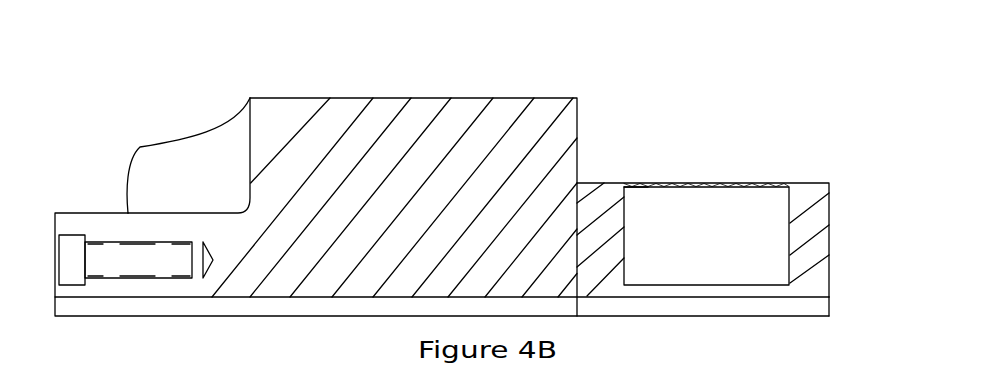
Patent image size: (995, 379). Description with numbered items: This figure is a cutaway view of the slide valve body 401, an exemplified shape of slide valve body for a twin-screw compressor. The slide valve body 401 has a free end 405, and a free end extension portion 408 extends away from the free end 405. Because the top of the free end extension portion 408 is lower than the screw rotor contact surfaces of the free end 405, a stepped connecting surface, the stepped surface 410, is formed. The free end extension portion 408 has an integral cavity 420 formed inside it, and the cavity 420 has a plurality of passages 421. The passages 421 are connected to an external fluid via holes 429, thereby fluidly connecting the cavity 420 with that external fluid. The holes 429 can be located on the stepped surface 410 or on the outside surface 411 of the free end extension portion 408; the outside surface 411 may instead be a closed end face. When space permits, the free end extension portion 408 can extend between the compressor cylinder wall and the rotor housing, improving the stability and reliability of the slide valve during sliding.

The slide valve body 401 is at (141, 82).
The free end 405 is at (318, 118).
The free end extension portion 408 is at (663, 305).
The stepped surface 410 is at (811, 183).
The outside surface 411 is at (829, 250).
The cavity 420 is at (757, 223).
The passages 421 is at (668, 185).
The holes 429 is at (641, 185).